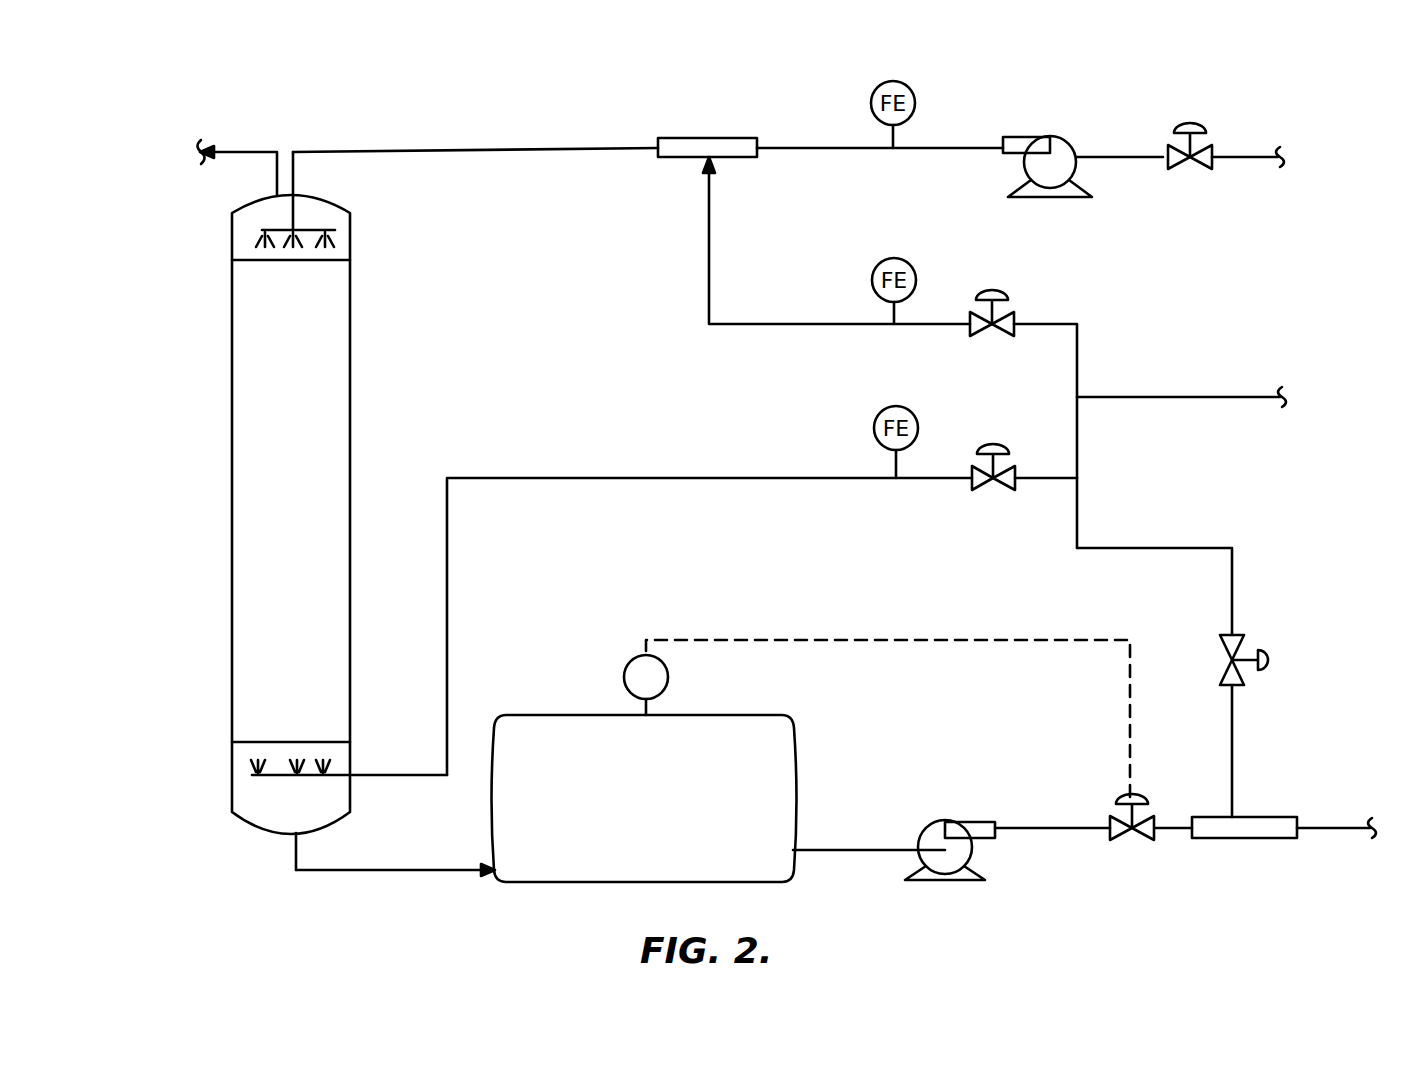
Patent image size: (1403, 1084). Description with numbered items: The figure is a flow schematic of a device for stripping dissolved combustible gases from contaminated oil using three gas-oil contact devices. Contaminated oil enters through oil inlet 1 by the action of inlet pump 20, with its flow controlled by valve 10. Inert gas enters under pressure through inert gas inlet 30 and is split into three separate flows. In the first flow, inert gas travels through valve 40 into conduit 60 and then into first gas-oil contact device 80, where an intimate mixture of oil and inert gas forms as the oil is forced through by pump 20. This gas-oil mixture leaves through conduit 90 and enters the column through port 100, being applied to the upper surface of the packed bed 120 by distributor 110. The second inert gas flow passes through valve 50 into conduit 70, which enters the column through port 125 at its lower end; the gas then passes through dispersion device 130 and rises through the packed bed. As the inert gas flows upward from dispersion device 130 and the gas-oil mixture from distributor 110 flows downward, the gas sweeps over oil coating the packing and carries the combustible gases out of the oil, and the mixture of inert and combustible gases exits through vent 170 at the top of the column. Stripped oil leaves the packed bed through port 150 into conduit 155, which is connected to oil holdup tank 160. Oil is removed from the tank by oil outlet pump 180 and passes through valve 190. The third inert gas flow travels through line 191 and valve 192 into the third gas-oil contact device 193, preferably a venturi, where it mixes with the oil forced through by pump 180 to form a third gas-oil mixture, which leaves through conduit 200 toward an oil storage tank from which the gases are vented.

The oil inlet 1 is at (1271, 156).
The valve 10 is at (1196, 130).
The inlet pump 20 is at (1051, 140).
The inert gas inlet 30 is at (1232, 397).
The valve 40 is at (1000, 302).
The valve 50 is at (997, 452).
The conduit 60 is at (772, 324).
The conduit 70 is at (588, 478).
The first gas-oil contact device 80 is at (716, 138).
The conduit 90 is at (322, 150).
The port 100 is at (296, 194).
The distributor 110 is at (337, 238).
The packed bed 120 is at (232, 528).
The port 125 is at (354, 774).
The dispersion device 130 is at (252, 772).
The port 150 is at (292, 844).
The conduit 155 is at (391, 870).
The oil holdup tank 160 is at (672, 826).
The vent 170 is at (206, 150).
The oil outlet pump 180 is at (950, 822).
The valve 190 is at (1125, 840).
The inert gas line 191 is at (1117, 548).
The valve 192 is at (1222, 660).
The third gas-oil contact device 193 is at (1250, 838).
The port 200 is at (1348, 828).